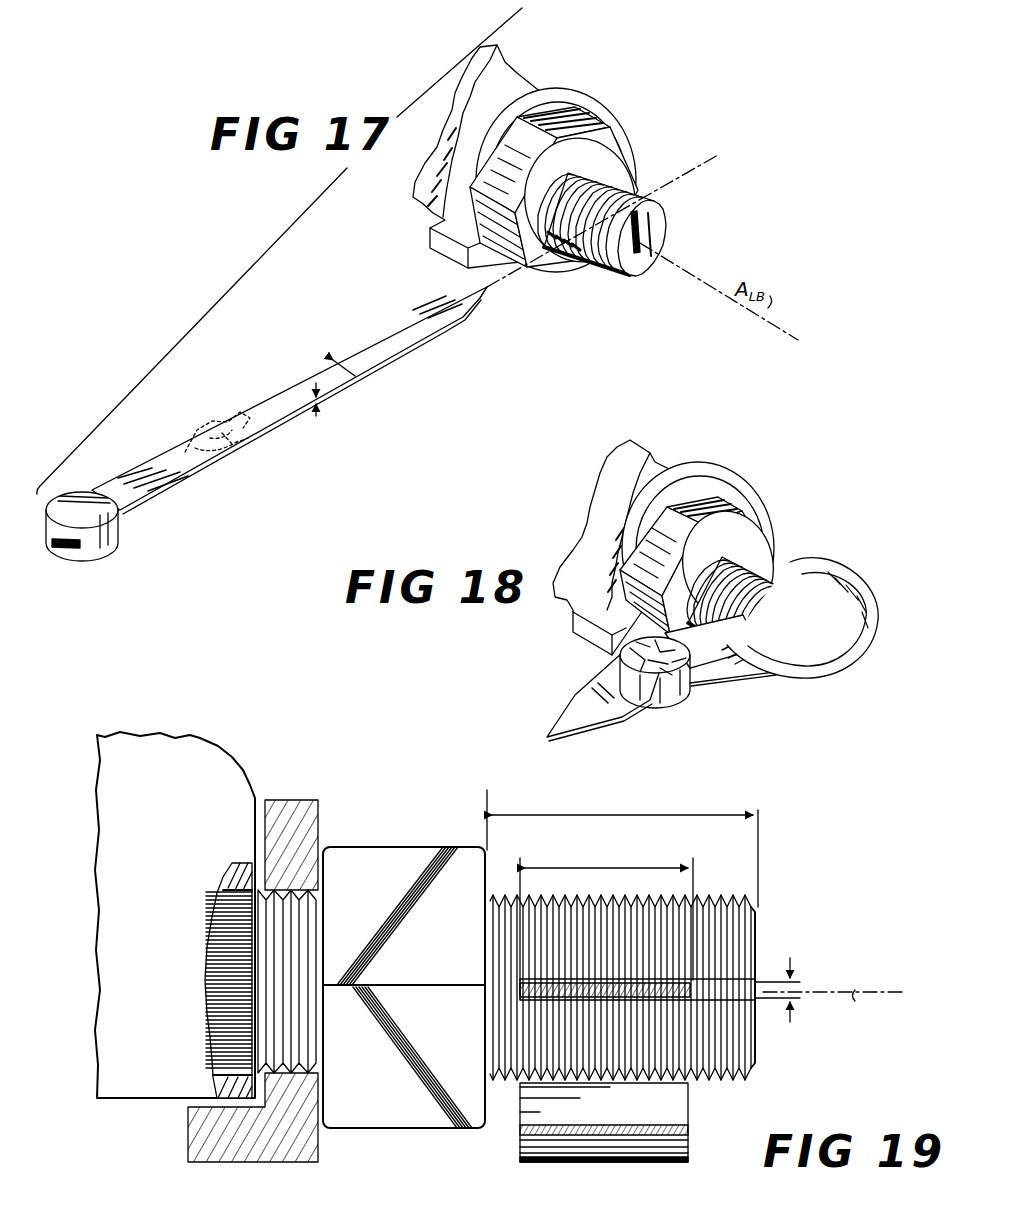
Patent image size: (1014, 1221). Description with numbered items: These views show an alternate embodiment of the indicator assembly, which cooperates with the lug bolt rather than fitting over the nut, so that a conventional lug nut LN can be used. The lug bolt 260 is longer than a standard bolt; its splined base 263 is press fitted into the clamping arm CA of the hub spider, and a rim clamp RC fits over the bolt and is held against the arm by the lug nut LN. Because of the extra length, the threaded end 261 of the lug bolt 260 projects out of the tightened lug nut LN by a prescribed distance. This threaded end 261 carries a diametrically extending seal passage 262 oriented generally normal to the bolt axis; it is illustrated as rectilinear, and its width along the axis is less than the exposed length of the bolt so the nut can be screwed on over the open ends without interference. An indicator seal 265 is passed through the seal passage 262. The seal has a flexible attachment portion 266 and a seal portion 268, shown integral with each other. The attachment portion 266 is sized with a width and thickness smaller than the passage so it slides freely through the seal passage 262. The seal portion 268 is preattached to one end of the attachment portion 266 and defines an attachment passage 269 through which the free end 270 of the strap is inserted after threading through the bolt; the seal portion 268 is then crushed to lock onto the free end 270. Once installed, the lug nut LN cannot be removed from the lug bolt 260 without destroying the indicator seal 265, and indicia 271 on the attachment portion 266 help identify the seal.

In FIG. 17, the lug bolt 260 is at (626, 233).
In FIG. 18, the lug bolt 260 is at (756, 597).
In FIG. 19, the lug bolt 260 is at (695, 951).
In FIG. 17, the threaded end 261 is at (626, 196).
In FIG. 18, the threaded end 261 is at (778, 570).
In FIG. 19, the threaded end 261 is at (704, 1076).
In FIG. 17, the seal passage 262 is at (577, 258).
In FIG. 19, the seal passage 262 is at (697, 980).
In FIG. 19, the splined base 263 is at (218, 910).
In FIG. 17, the indicator seal 265 is at (307, 400).
In FIG. 18, the indicator seal 265 is at (712, 657).
In FIG. 19, the indicator seal 265 is at (608, 1088).
In FIG. 17, the attachment portion 266 is at (408, 343).
In FIG. 18, the attachment portion 266 is at (828, 572).
In FIG. 19, the attachment portion 266 is at (683, 1119).
In FIG. 17, the seal portion 268 is at (104, 544).
In FIG. 18, the seal portion 268 is at (668, 692).
In FIG. 17, the attachment passage 269 is at (73, 549).
In FIG. 17, the free end 270 is at (486, 292).
In FIG. 18, the free end 270 is at (560, 731).
In FIG. 17, the indicia 271 is at (222, 420).
In FIG. 17, the clamping arms CA is at (507, 61).
In FIG. 18, the clamping arms CA is at (674, 444).
In FIG. 19, the clamping arms CA is at (210, 771).
In FIG. 17, the rim clamps RC is at (549, 87).
In FIG. 18, the rim clamps RC is at (684, 482).
In FIG. 19, the rim clamps RC is at (308, 807).
In FIG. 17, the lug nut LN is at (603, 127).
In FIG. 18, the lug nut LN is at (751, 521).
In FIG. 19, the lug nut LN is at (402, 850).